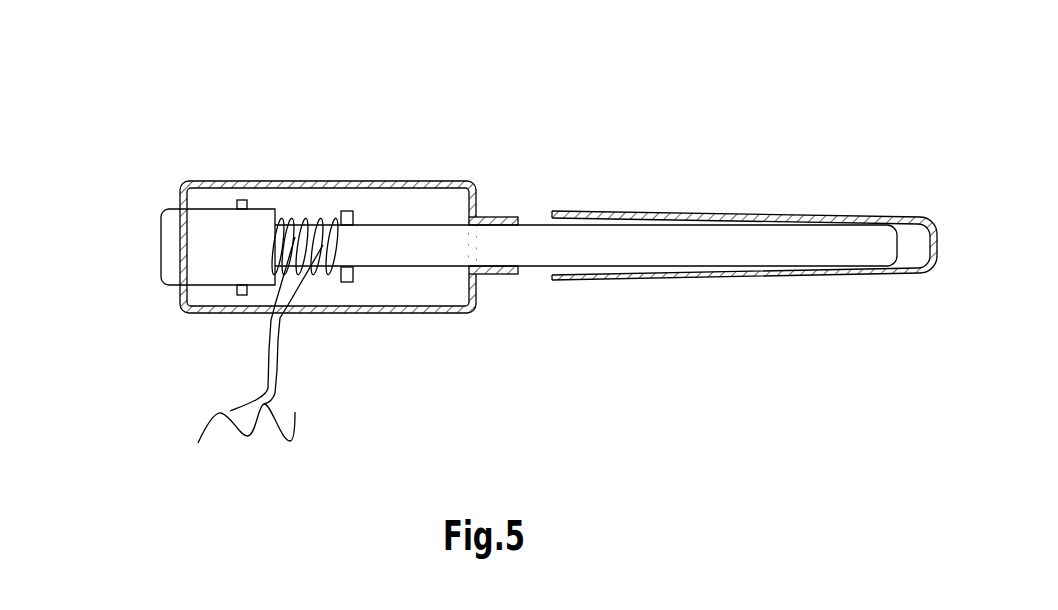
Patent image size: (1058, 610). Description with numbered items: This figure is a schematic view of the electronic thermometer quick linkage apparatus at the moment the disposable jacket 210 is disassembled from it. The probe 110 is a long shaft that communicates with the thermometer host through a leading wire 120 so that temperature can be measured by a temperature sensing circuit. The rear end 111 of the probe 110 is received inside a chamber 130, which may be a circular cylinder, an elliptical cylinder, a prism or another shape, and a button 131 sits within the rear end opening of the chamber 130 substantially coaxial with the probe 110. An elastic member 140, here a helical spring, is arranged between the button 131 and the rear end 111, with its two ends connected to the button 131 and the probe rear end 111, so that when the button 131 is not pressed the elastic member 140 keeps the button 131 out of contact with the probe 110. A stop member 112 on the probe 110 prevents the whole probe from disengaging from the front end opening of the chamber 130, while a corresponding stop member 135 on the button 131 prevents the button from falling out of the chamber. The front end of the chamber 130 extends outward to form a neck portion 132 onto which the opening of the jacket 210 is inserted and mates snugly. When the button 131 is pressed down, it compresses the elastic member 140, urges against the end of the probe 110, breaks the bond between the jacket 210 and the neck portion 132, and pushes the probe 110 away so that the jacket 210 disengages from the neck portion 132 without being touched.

The probe 110 is at (783, 247).
The rear end 111 is at (302, 243).
The stop member 112 is at (352, 215).
The leading wire 120 is at (278, 326).
The chamber 130 is at (317, 203).
The button 131 is at (207, 245).
The neck portion 132 is at (495, 220).
The stop member 135 is at (238, 200).
The elastic member 140 is at (305, 240).
The jacket 210 is at (678, 216).